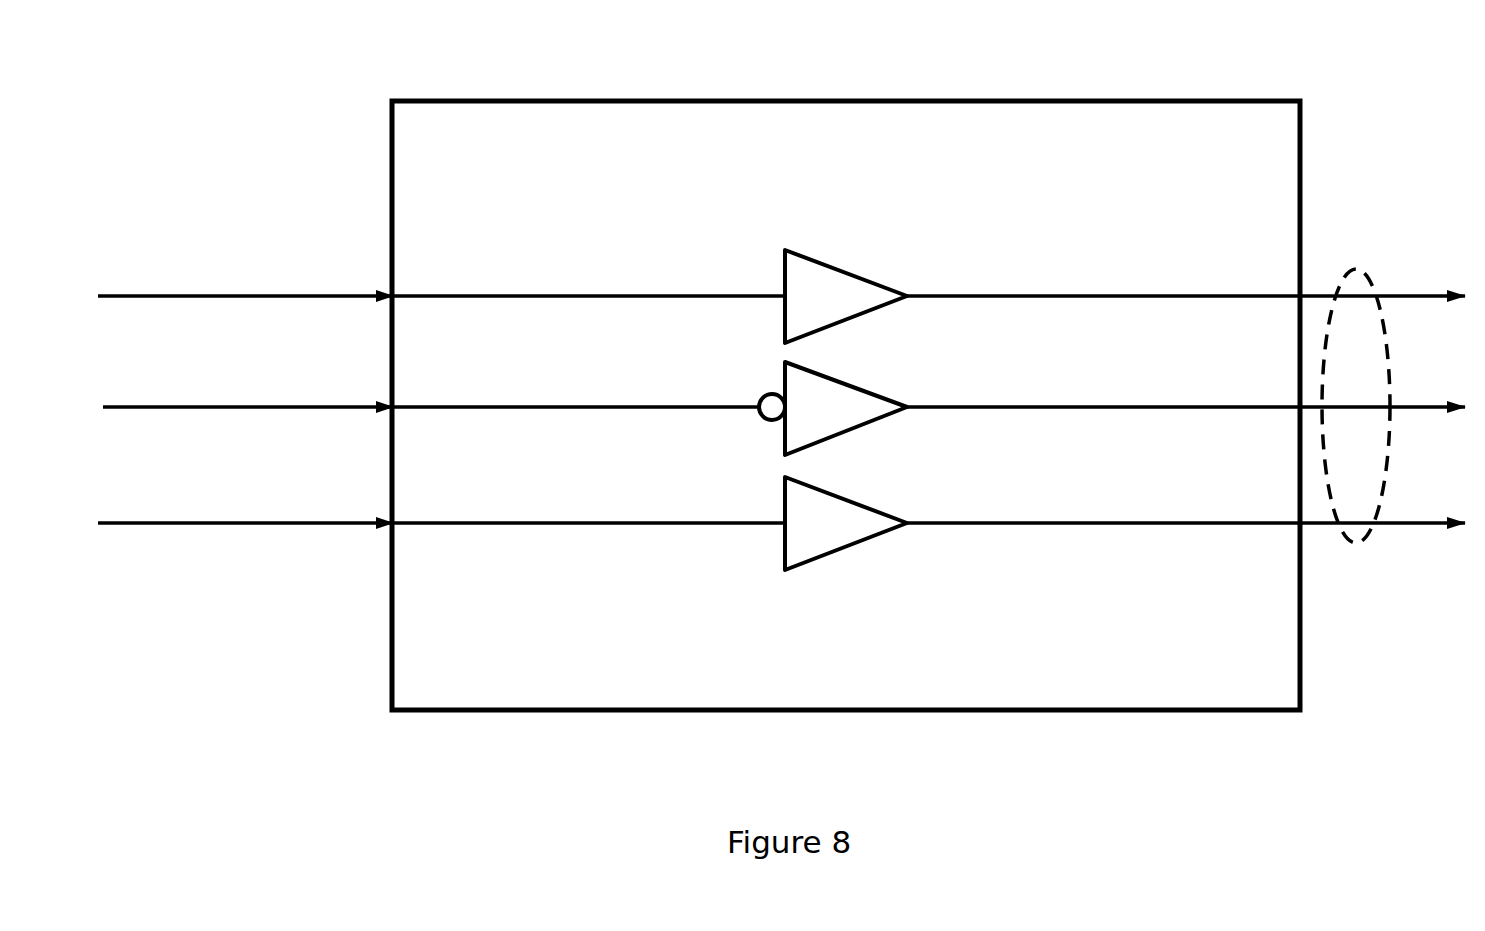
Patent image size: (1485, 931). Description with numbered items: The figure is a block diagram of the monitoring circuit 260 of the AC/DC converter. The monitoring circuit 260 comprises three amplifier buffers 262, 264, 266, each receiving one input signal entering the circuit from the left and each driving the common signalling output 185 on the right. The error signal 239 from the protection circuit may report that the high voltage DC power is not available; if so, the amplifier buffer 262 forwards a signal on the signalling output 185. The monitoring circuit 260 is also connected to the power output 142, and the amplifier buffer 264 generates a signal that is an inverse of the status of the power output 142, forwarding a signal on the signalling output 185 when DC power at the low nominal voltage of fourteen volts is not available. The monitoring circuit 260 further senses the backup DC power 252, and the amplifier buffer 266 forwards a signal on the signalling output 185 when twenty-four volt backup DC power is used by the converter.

The monitoring circuit 260 is at (1035, 101).
The error signal 239 is at (208, 296).
The power output 142 is at (207, 407).
The backup DC power 252 is at (205, 523).
The amplifier buffer 262 is at (860, 273).
The amplifier buffer 264 is at (860, 384).
The amplifier buffer 266 is at (860, 499).
The signalling output 185 is at (1355, 271).